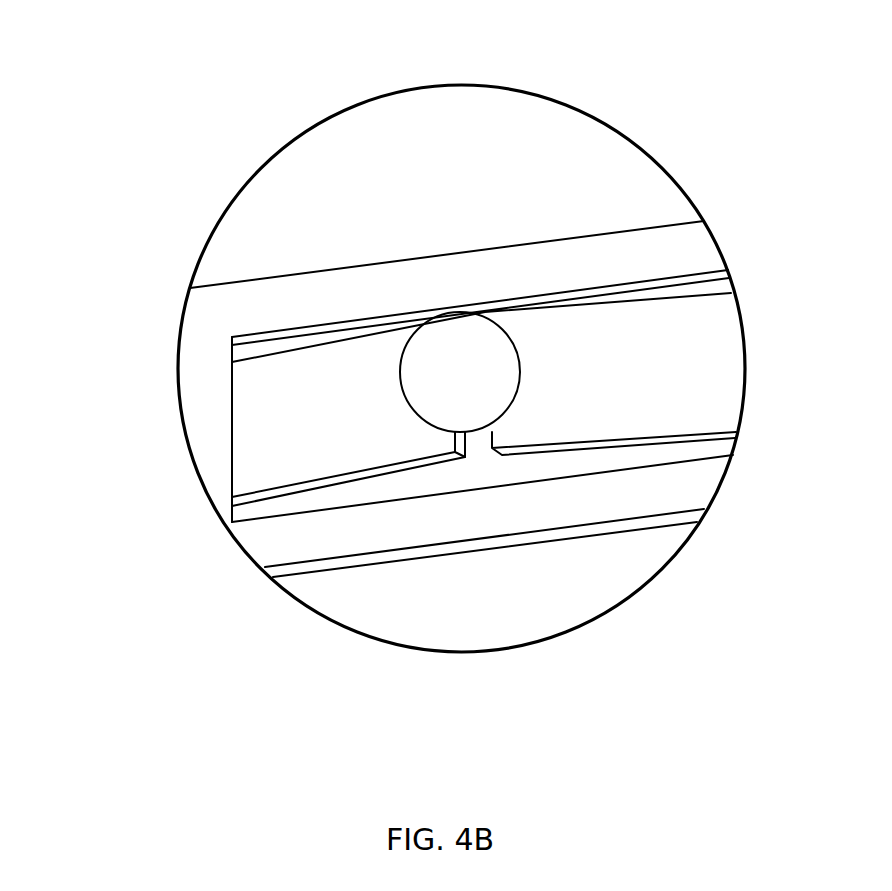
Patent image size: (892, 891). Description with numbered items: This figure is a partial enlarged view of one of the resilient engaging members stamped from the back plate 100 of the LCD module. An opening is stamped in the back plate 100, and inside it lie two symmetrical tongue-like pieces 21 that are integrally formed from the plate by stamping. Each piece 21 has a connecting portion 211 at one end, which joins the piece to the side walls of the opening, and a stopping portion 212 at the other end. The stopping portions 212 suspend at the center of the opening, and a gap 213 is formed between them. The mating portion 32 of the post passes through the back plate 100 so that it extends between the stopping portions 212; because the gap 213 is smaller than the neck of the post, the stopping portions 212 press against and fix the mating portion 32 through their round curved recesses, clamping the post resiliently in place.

The back plate 100 is at (198, 327).
The tongue-like piece 21 is at (245, 420).
The connecting portion 211 is at (233, 472).
The stopping portion 212 is at (517, 340).
The gap 213 is at (483, 445).
The mating portion 32 is at (437, 333).